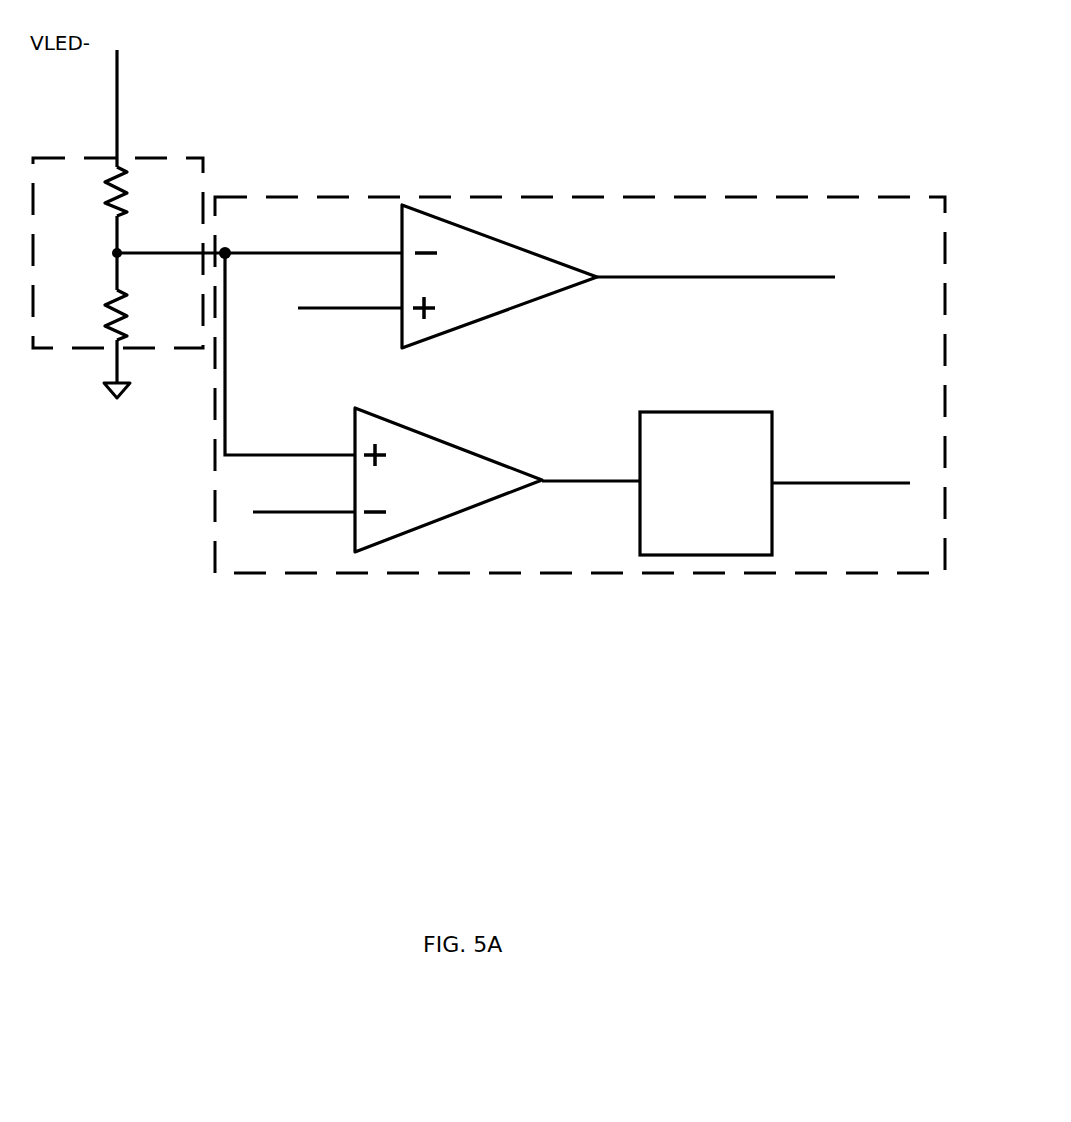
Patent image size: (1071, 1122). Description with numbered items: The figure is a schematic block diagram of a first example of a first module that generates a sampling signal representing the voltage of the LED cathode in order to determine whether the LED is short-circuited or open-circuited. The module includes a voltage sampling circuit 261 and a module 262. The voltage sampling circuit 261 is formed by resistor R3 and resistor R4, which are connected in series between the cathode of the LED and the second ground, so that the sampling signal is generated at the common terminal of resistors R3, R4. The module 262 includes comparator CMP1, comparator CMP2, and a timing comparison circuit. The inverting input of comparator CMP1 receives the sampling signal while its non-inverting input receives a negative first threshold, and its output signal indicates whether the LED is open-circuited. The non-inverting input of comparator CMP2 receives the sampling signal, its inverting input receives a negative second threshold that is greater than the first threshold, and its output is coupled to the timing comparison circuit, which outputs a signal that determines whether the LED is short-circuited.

The voltage sampling circuit 261 is at (154, 234).
The module 262 is at (580, 338).
The resistor R3 is at (91, 191).
The resistor R4 is at (91, 315).
The comparator CMP1 is at (499, 276).
The comparator CMP2 is at (448, 480).